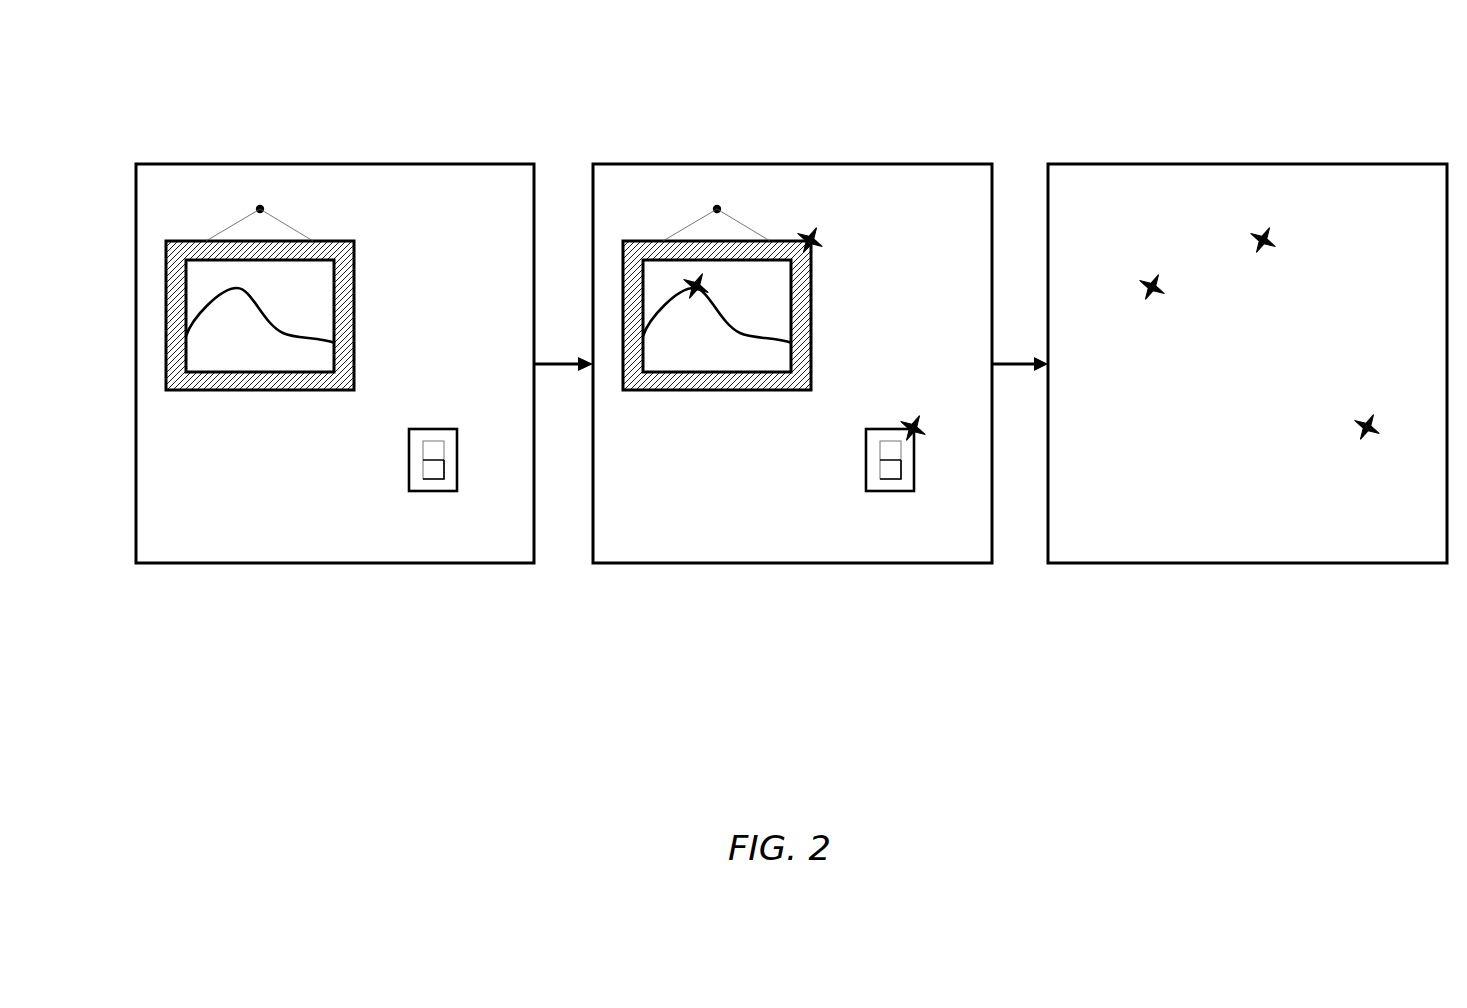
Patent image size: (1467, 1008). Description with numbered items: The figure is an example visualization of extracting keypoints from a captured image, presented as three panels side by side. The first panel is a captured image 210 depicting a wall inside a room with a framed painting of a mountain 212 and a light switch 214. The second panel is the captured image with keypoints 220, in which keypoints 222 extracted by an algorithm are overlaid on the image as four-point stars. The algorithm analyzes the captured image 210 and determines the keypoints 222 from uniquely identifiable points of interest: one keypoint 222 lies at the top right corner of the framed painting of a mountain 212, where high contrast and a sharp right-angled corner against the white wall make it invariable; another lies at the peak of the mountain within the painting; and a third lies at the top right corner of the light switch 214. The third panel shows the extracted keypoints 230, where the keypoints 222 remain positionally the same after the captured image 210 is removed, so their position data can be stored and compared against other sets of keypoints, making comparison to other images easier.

The captured image 210 is at (255, 537).
The framed painting of a mountain 212 is at (187, 390).
The light switch 214 is at (457, 490).
The captured image with keypoints 220 is at (710, 533).
The keypoints 222 is at (1337, 120).
The extracted keypoints 230 is at (1178, 533).